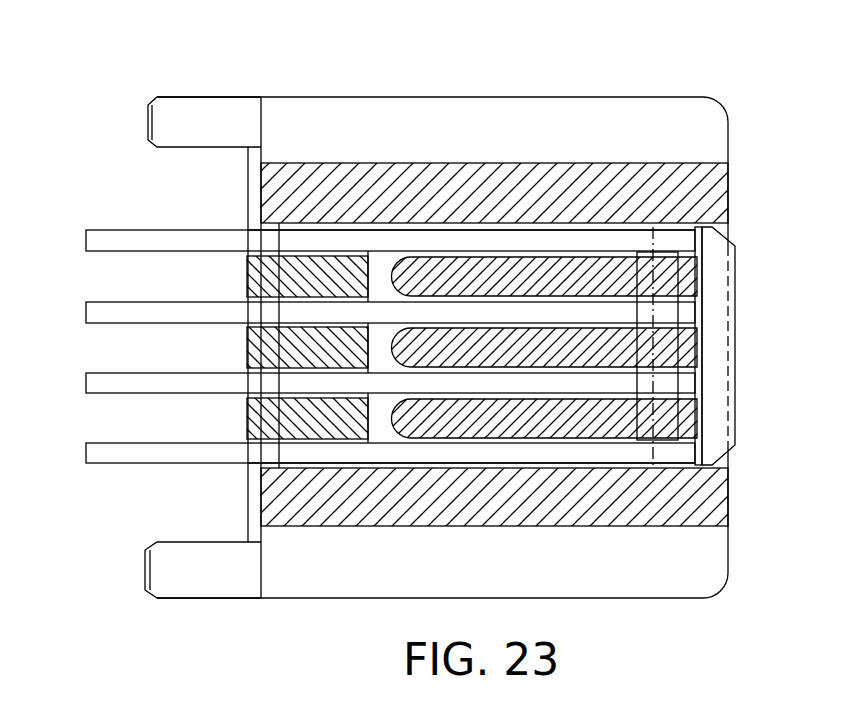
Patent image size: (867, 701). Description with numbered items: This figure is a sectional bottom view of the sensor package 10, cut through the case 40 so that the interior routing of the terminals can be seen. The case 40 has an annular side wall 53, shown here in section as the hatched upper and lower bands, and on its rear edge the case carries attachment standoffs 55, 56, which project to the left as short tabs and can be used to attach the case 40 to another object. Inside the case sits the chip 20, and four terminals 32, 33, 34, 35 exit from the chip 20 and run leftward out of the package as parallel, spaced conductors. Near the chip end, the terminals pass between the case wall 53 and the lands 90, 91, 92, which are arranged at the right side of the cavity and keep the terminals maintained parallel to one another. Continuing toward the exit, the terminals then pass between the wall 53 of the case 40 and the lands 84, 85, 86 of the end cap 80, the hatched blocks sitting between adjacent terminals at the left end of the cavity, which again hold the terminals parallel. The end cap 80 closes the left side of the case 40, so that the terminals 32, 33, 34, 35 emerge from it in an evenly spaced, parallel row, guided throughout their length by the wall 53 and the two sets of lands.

The electrical connector 10 is at (387, 82).
The chip 20 is at (688, 280).
The terminal 32 is at (108, 237).
The terminal 33 is at (108, 310).
The terminal 34 is at (108, 382).
The terminal 35 is at (108, 452).
The case 40 is at (713, 122).
The annular side wall 53 is at (718, 190).
The attachment standoff 55 is at (175, 591).
The attachment standoff 56 is at (186, 103).
The end cap 80 is at (262, 498).
The land 84 is at (268, 270).
The land 85 is at (268, 342).
The land 86 is at (265, 413).
The land 90 is at (688, 420).
The land 91 is at (688, 348).
The land 92 is at (720, 258).